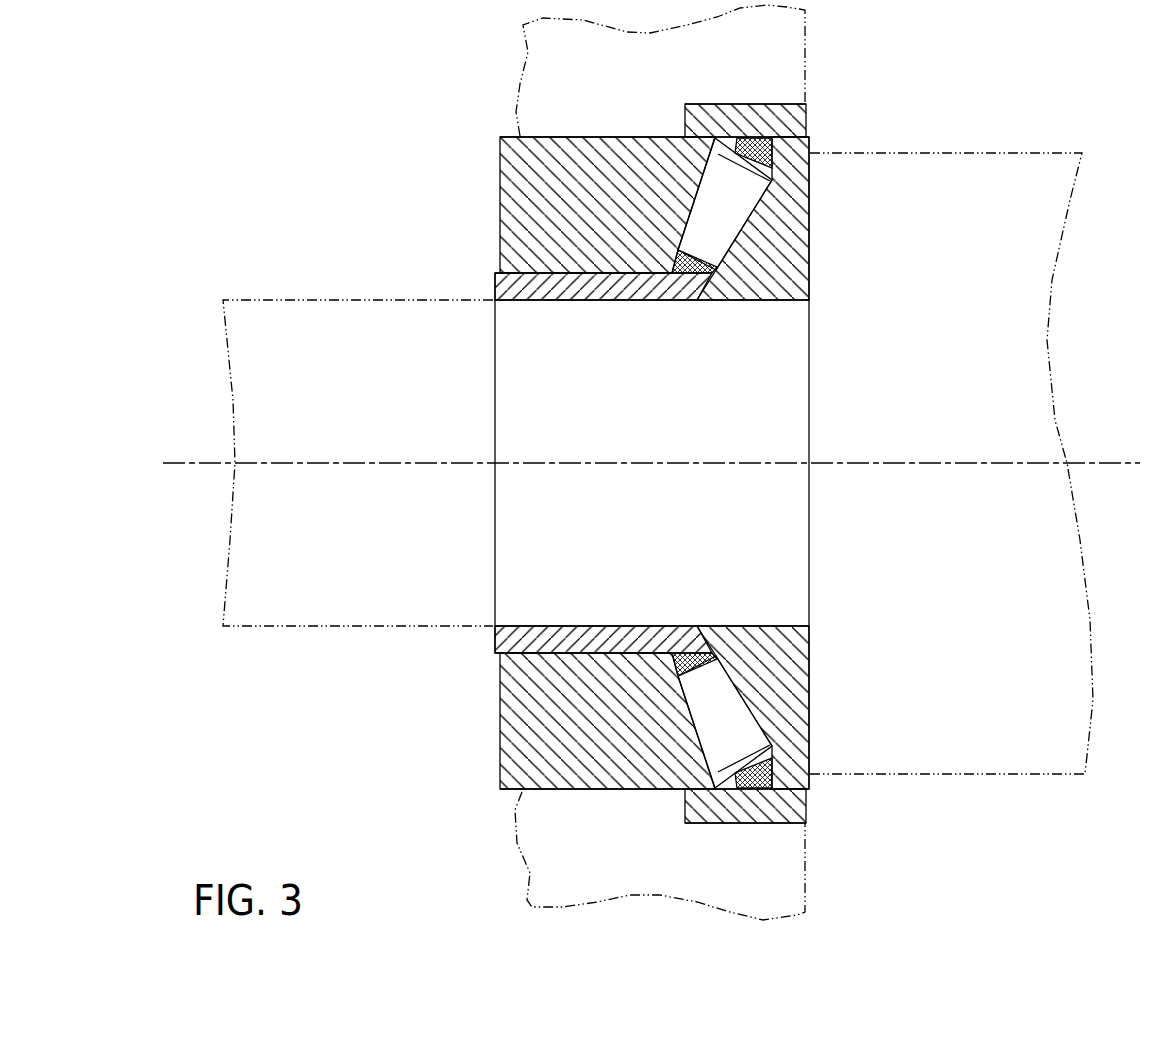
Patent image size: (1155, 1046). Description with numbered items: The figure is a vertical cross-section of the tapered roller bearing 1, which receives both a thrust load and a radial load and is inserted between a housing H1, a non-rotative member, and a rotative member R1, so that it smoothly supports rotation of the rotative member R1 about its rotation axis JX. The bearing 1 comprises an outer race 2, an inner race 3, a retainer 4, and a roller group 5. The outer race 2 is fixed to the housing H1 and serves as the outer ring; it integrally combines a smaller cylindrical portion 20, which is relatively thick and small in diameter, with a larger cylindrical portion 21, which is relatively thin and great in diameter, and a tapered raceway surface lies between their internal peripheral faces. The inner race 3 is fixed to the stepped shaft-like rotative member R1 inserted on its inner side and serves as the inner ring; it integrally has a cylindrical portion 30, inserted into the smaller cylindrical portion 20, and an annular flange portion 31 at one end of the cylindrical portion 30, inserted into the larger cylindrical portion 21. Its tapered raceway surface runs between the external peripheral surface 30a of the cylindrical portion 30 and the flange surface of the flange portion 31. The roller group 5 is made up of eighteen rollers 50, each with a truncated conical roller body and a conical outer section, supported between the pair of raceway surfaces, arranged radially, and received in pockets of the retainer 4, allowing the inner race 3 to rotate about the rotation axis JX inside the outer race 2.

The tapered roller bearing 1 is at (910, 84).
The outer race 2 is at (752, 99).
The smaller cylindrical portion 20 is at (600, 136).
The larger cylindrical portion 21 is at (702, 104).
The inner race 3 is at (654, 438).
The cylindrical portion 30 is at (495, 278).
The external peripheral surface 30a is at (495, 273).
The flange portion 31 is at (811, 282).
The retainer 4 is at (693, 284).
The roller group 5 is at (696, 152).
The roller 50 is at (737, 220).
The housing H1 is at (807, 40).
The rotative member R1 is at (268, 300).
The rotation axis JX is at (192, 463).